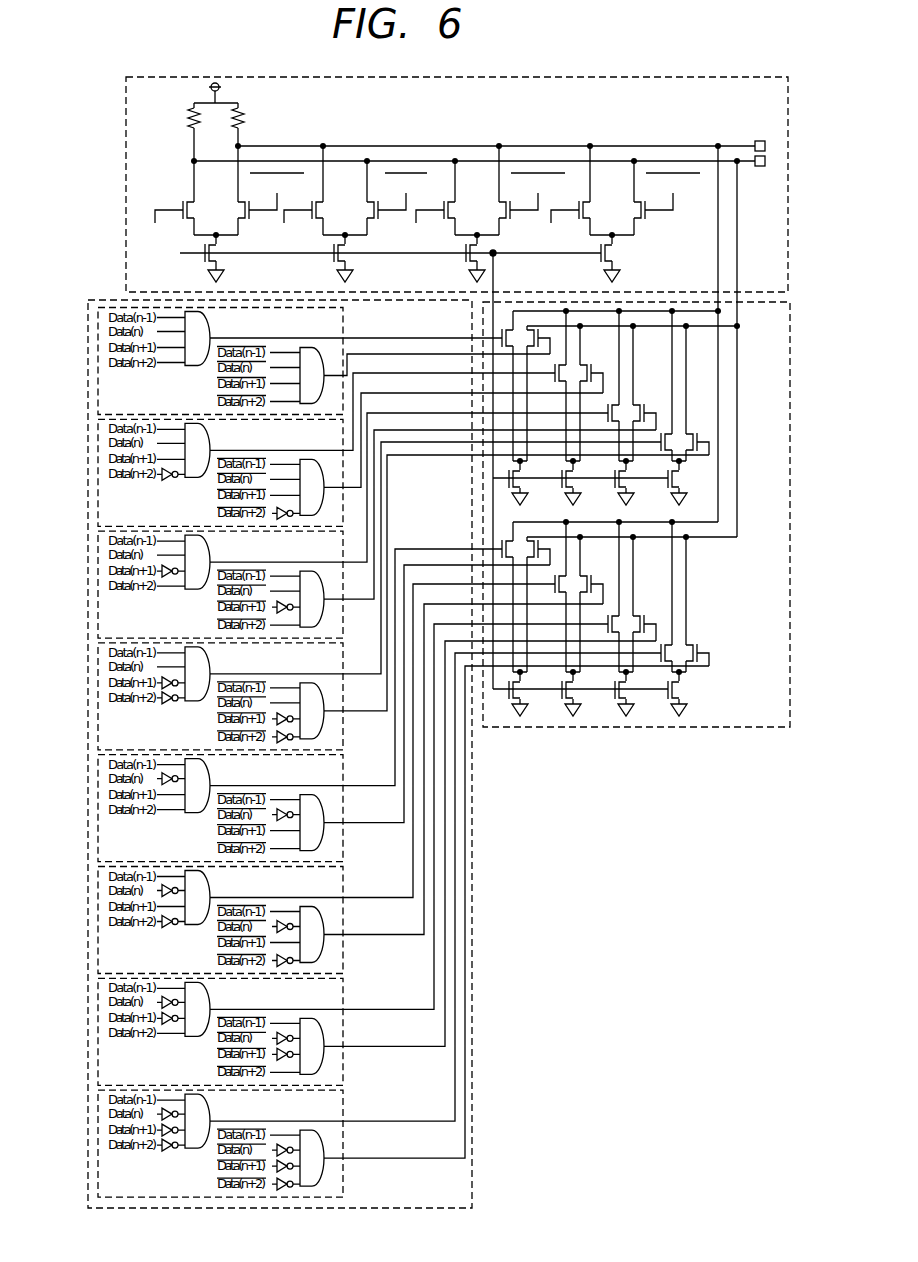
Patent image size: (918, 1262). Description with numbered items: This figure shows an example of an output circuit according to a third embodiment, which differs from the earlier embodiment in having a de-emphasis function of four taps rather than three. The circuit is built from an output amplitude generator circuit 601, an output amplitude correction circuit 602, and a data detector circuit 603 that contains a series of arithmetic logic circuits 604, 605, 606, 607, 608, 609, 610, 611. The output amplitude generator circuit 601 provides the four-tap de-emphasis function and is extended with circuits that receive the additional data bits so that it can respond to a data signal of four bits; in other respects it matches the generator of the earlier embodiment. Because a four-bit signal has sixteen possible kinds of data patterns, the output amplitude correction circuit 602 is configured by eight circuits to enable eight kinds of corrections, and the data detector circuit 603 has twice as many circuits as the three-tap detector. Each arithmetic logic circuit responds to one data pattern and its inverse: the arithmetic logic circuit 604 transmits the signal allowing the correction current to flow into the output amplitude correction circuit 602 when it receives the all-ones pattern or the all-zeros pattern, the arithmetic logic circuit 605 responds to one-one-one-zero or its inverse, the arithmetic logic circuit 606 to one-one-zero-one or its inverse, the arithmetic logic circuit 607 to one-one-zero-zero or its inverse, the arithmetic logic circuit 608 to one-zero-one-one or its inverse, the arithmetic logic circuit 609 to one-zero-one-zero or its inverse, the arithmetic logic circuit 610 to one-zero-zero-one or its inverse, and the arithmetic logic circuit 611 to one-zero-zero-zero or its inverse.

The output amplitude generator circuit 601 is at (706, 77).
The output amplitude correction circuit 602 is at (642, 728).
The data detector circuit 603 is at (104, 300).
The arithmetic logic circuit 604 is at (98, 346).
The arithmetic logic circuit 605 is at (98, 457).
The arithmetic logic circuit 606 is at (98, 569).
The arithmetic logic circuit 607 is at (98, 681).
The arithmetic logic circuit 608 is at (98, 793).
The arithmetic logic circuit 609 is at (98, 904).
The arithmetic logic circuit 610 is at (98, 1016).
The arithmetic logic circuit 611 is at (98, 1128).